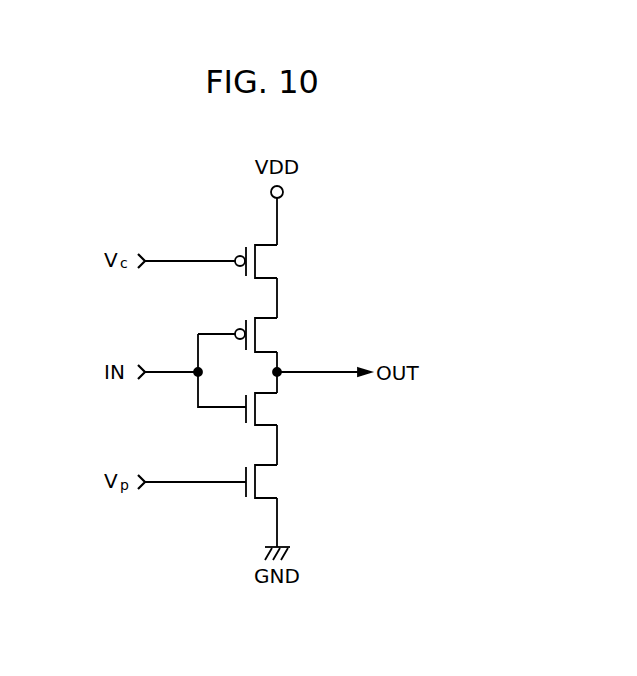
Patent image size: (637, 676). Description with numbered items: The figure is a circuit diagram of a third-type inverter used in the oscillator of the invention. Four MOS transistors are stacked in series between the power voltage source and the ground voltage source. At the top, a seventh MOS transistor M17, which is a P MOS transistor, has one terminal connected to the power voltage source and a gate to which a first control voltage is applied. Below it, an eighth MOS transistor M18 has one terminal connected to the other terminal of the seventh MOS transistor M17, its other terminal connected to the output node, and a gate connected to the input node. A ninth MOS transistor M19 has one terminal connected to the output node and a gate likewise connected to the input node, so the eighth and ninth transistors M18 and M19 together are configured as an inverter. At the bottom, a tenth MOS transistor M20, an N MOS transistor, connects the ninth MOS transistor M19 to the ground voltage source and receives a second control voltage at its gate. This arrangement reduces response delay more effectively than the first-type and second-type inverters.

The seventh MOS transistor M17 is at (280, 261).
The eighth MOS transistor M18 is at (280, 335).
The ninth MOS transistor M19 is at (286, 409).
The tenth MOS transistor M20 is at (286, 481).